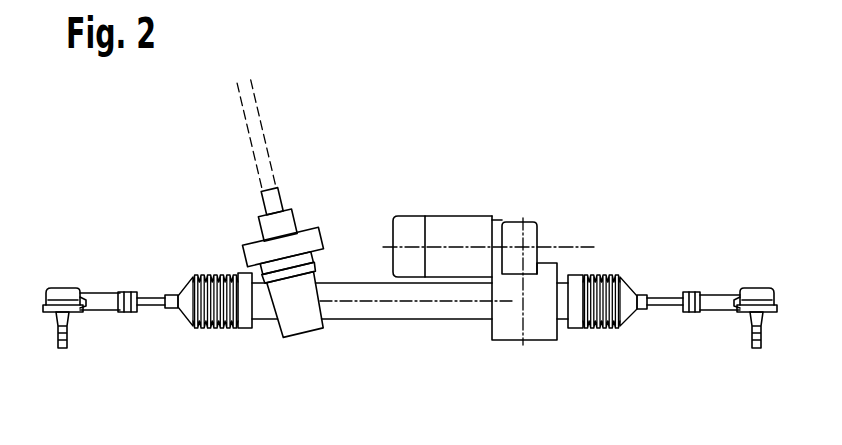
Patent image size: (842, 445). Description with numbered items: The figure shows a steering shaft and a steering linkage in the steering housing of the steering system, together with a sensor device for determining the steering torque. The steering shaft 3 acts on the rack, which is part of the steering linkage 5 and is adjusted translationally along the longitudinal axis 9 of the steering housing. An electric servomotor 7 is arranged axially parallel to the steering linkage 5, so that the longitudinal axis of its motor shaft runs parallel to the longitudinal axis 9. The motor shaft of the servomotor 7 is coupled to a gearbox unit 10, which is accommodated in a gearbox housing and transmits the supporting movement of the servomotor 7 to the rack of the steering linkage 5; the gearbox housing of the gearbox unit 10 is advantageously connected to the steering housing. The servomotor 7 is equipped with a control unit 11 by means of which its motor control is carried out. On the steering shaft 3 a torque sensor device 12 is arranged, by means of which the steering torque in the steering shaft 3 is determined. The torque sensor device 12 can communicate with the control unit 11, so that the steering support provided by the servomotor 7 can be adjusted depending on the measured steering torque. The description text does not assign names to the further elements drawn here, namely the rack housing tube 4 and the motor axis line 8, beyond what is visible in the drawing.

The steering shaft 3 is at (251, 97).
The rack housing 4 is at (357, 321).
The steering linkage 5 is at (676, 283).
The electric servomotor 7 is at (468, 225).
The motor axis 8 is at (580, 247).
The longitudinal axis 9 is at (453, 303).
The gearbox unit 10 is at (543, 341).
The control unit 11 is at (412, 225).
The torque sensor device 12 is at (255, 248).